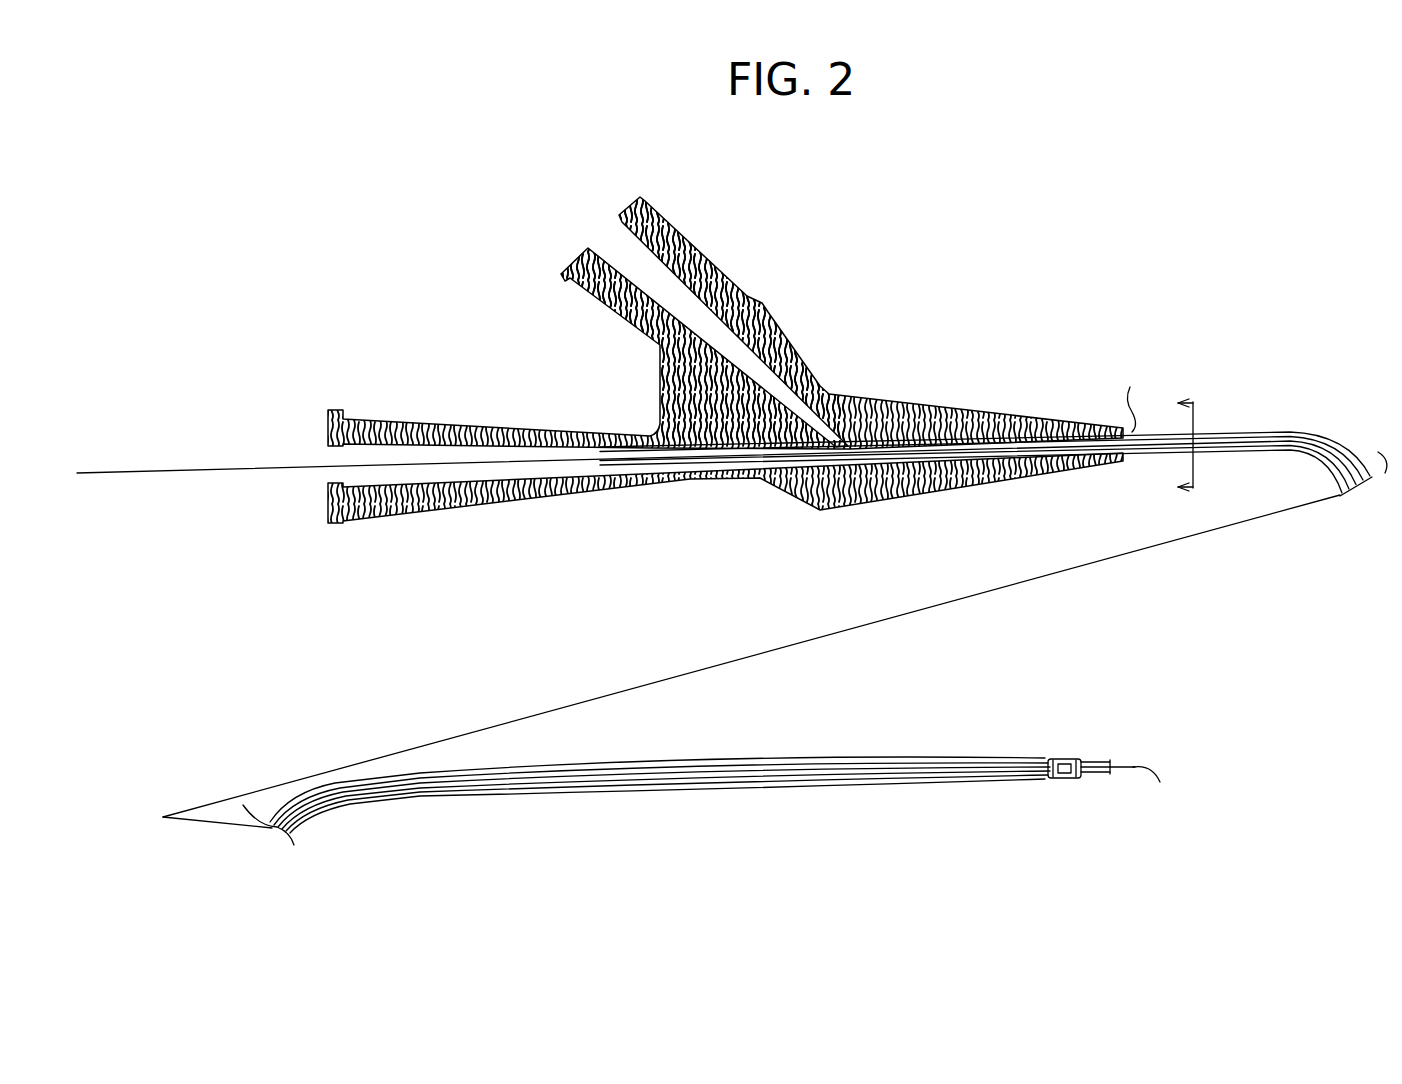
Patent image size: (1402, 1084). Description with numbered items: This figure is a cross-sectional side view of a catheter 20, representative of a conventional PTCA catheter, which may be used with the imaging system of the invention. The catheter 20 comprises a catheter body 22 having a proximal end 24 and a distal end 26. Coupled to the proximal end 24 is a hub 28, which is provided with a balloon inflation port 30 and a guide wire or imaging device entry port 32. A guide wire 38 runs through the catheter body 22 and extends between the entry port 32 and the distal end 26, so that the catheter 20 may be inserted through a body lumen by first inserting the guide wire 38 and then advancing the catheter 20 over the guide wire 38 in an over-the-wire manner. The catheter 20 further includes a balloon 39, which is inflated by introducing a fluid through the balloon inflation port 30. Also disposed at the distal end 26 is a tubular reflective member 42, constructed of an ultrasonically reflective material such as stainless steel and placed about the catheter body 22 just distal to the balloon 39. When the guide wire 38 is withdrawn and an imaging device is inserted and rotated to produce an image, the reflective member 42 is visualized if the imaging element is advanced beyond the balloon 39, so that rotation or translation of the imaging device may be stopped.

The catheter 20 is at (1080, 303).
The catheter body 22 is at (1302, 430).
The proximal end 24 is at (1160, 424).
The distal end 26 is at (1093, 758).
The hub 28 is at (923, 403).
The balloon inflation port 30 is at (603, 237).
The guide wire or imaging device entry port 32 is at (327, 477).
The guide wire 38 is at (153, 467).
The balloon 39 is at (703, 792).
The tubular reflective member 42 is at (1063, 777).